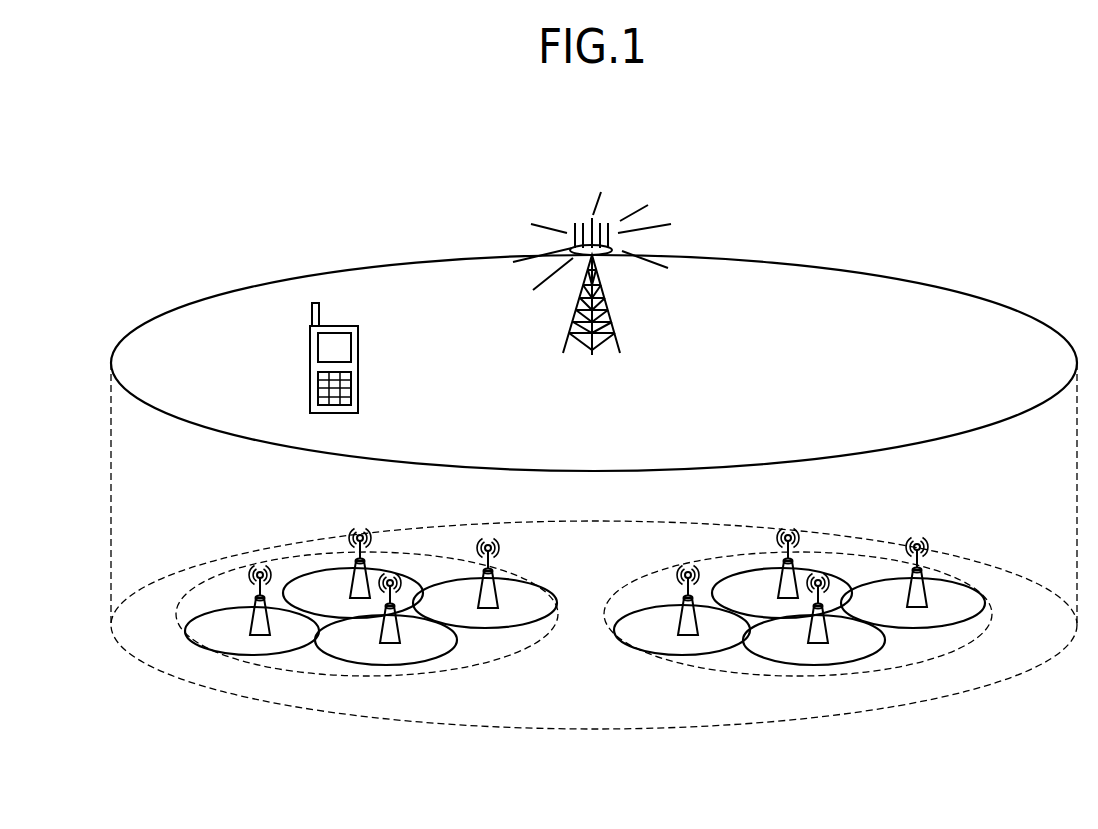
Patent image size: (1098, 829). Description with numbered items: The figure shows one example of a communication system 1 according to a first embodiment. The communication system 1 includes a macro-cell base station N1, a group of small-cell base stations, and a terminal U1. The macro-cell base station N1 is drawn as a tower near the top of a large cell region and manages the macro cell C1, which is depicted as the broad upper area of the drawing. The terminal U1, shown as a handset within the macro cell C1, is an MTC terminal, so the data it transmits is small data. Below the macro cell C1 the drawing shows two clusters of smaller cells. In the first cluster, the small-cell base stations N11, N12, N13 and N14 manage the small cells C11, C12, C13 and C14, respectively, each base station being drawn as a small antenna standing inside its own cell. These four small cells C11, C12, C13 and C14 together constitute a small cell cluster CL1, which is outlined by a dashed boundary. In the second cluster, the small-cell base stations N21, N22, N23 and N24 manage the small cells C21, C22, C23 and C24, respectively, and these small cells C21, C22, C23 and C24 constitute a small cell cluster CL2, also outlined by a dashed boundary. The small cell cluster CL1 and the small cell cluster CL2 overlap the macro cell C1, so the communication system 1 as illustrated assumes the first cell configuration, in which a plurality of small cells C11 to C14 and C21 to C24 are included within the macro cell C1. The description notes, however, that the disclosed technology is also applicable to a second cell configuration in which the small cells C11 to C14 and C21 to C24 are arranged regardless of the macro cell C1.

The communication system 1 is at (792, 194).
The macro cell C1 is at (856, 271).
The macro-cell base station N1 is at (619, 333).
The terminal U1 is at (310, 368).
The small cell cluster CL1 is at (313, 676).
The small cell cluster CL2 is at (742, 676).
The small cell C11 is at (252, 631).
The small cell C12 is at (353, 593).
The small cell C13 is at (485, 603).
The small cell C14 is at (386, 640).
The small cell C21 is at (682, 630).
The small cell C22 is at (782, 593).
The small cell C23 is at (913, 603).
The small cell C24 is at (814, 640).
The small-cell base station N11 is at (253, 604).
The small-cell base station N12 is at (353, 582).
The small-cell base station N13 is at (481, 593).
The small-cell base station N14 is at (390, 648).
The small-cell base station N21 is at (680, 610).
The small-cell base station N22 is at (780, 583).
The small-cell base station N23 is at (910, 593).
The small-cell base station N24 is at (818, 648).